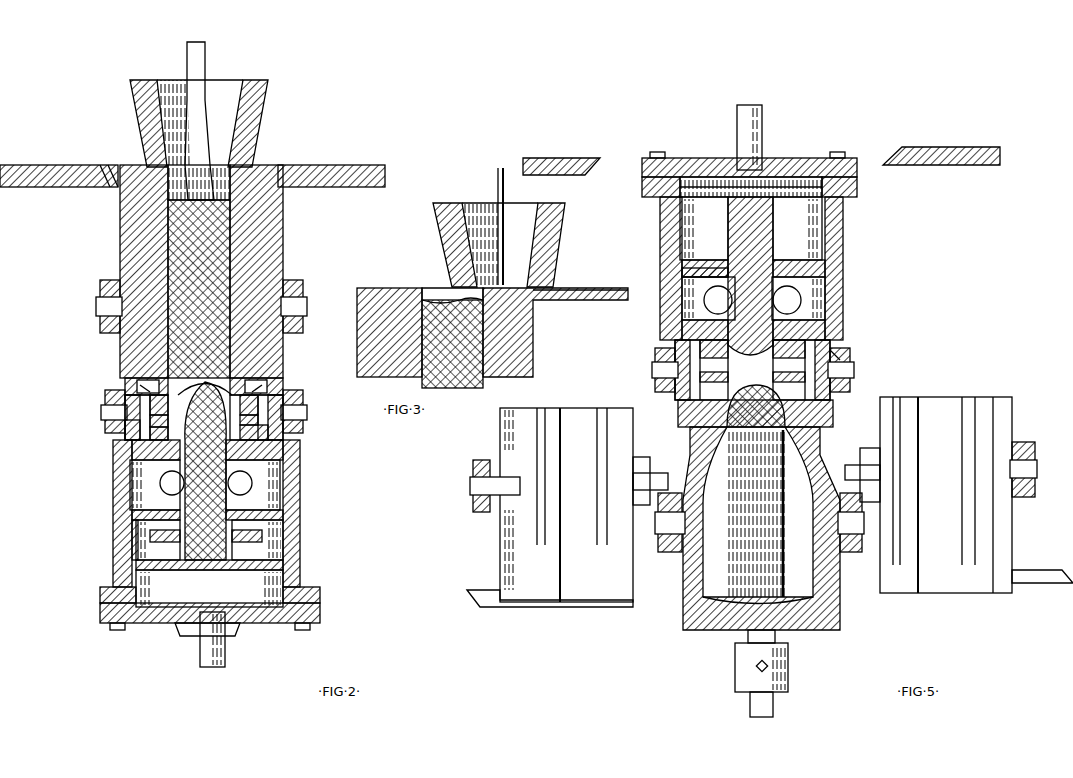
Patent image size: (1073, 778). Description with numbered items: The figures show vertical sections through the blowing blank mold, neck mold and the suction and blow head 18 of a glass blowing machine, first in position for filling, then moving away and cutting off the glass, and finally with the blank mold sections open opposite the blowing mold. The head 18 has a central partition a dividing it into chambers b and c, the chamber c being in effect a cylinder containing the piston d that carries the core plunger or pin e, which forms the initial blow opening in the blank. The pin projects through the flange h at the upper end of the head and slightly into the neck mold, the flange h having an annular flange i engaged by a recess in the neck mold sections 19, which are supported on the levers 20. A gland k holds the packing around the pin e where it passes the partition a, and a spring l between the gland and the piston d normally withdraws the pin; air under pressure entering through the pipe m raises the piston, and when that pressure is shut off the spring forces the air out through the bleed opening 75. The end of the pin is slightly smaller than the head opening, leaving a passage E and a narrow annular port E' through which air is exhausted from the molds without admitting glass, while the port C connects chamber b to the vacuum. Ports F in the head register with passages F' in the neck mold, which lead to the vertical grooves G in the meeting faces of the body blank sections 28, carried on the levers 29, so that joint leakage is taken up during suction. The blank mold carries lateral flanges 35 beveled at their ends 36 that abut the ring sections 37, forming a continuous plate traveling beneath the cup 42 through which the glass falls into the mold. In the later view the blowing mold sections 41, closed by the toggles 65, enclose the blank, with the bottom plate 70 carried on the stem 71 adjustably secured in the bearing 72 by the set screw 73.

In FIG. 2, the suction and blow head 18 is at (300, 518).
In FIG. 5, the suction and blow head 18 is at (660, 268).
In FIG. 2, the neck mold sections 19 is at (125, 390).
In FIG. 5, the neck mold sections 19 is at (755, 406).
In FIG. 2, the levers 20 is at (108, 416).
In FIG. 5, the levers 20 is at (662, 373).
In FIG. 2, the body blank sections 28 is at (135, 255).
In FIG. 3, the body blank sections 28 is at (393, 315).
In FIG. 5, the body blank sections 28 is at (1000, 424).
In FIG. 2, the levers 29 is at (105, 303).
In FIG. 5, the levers 29 is at (476, 486).
In FIG. 2, the lateral flanges 35 is at (64, 190).
In FIG. 3, the lateral flanges 35 is at (568, 290).
In FIG. 5, the lateral flanges 35 is at (490, 598).
In FIG. 2, the beveled ends 36 is at (47, 172).
In FIG. 2, the ring sections 37 is at (20, 172).
In FIG. 3, the ring sections 37 is at (546, 158).
In FIG. 5, the ring sections 37 is at (926, 147).
In FIG. 5, the blowing mold sections 41 is at (700, 628).
In FIG. 2, the cup 42 is at (248, 112).
In FIG. 3, the cup 42 is at (450, 236).
In FIG. 5, the toggles 65 is at (665, 528).
In FIG. 5, the bottom plate 70 is at (740, 612).
In FIG. 5, the stem 71 is at (765, 705).
In FIG. 5, the bearing 72 is at (782, 658).
In FIG. 5, the set screw 73 is at (760, 668).
In FIG. 2, the bleed opening 75 is at (172, 622).
In FIG. 5, the bleed opening 75 is at (690, 158).
In FIG. 5, the vertical grooves G is at (552, 440).
In FIG. 2, the port C is at (246, 482).
In FIG. 5, the port C is at (716, 300).
In FIG. 2, the passage E is at (302, 434).
In FIG. 5, the passage E is at (837, 359).
In FIG. 2, the annular port E' is at (297, 420).
In FIG. 2, the ports F is at (245, 430).
In FIG. 5, the ports F is at (787, 359).
In FIG. 2, the passages F' is at (89, 432).
In FIG. 5, the passages F' is at (667, 361).
In FIG. 2, the central partition a is at (145, 512).
In FIG. 5, the central partition a is at (812, 268).
In FIG. 2, the chamber b is at (262, 494).
In FIG. 5, the chamber b is at (806, 292).
In FIG. 2, the chamber c is at (168, 579).
In FIG. 5, the chamber c is at (700, 225).
In FIG. 2, the piston d is at (280, 563).
In FIG. 5, the piston d is at (826, 184).
In FIG. 2, the core plunger or pin e is at (205, 471).
In FIG. 5, the core plunger or pin e is at (763, 276).
In FIG. 2, the flange h is at (154, 448).
In FIG. 2, the annular flange i is at (152, 432).
In FIG. 2, the gland k is at (265, 530).
In FIG. 5, the gland k is at (806, 246).
In FIG. 2, the spring l is at (165, 548).
In FIG. 5, the spring l is at (720, 200).
In FIG. 2, the pipe m is at (212, 648).
In FIG. 5, the pipe m is at (752, 128).